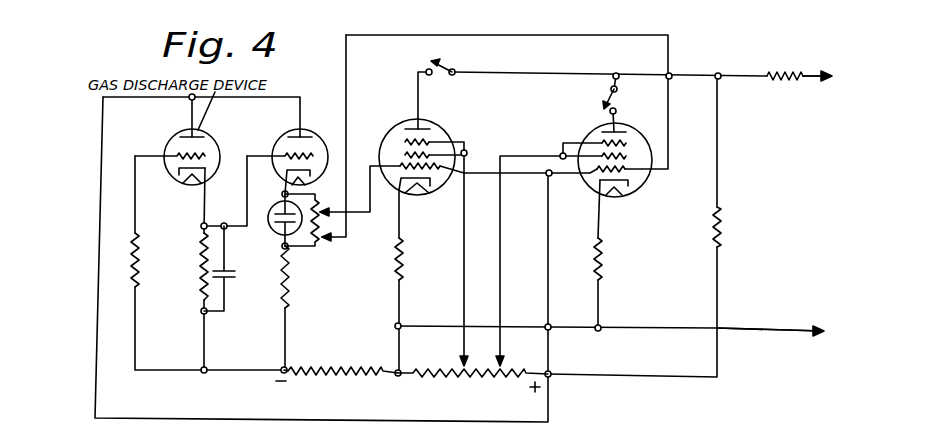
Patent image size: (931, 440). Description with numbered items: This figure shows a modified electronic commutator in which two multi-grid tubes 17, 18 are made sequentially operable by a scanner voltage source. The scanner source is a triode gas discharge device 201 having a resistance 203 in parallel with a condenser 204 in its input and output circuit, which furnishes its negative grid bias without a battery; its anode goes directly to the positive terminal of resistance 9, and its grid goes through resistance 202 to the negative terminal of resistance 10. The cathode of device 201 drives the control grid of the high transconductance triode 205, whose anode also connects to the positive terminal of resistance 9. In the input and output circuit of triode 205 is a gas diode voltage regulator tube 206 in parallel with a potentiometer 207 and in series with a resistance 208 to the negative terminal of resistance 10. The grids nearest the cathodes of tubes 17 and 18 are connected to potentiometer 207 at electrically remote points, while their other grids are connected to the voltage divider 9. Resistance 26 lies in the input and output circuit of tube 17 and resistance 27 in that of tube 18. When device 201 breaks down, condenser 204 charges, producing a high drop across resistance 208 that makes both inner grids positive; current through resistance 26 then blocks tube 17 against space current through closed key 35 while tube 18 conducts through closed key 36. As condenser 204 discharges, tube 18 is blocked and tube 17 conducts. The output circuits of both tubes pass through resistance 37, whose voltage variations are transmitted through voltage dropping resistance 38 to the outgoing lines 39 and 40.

The triode gas discharge device 201 is at (175, 135).
The high transconductance triode 205 is at (287, 135).
The resistance 202 is at (140, 256).
The resistance 203 is at (199, 288).
The condenser 204 is at (230, 283).
The voltage regulator tube 206 is at (269, 225).
The potentiometer 207 is at (319, 244).
The resistance 208 is at (290, 287).
The tube 17 is at (398, 128).
The tube 18 is at (589, 131).
The resistance 26 is at (402, 262).
The resistance 27 is at (601, 259).
The key 35 is at (443, 67).
The key 36 is at (617, 101).
The resistance 37 is at (720, 229).
The voltage dropping resistance 38 is at (790, 70).
The outgoing line 39 is at (811, 82).
The outgoing line 40 is at (746, 328).
The resistance 10 is at (345, 381).
The resistance 9 is at (478, 377).